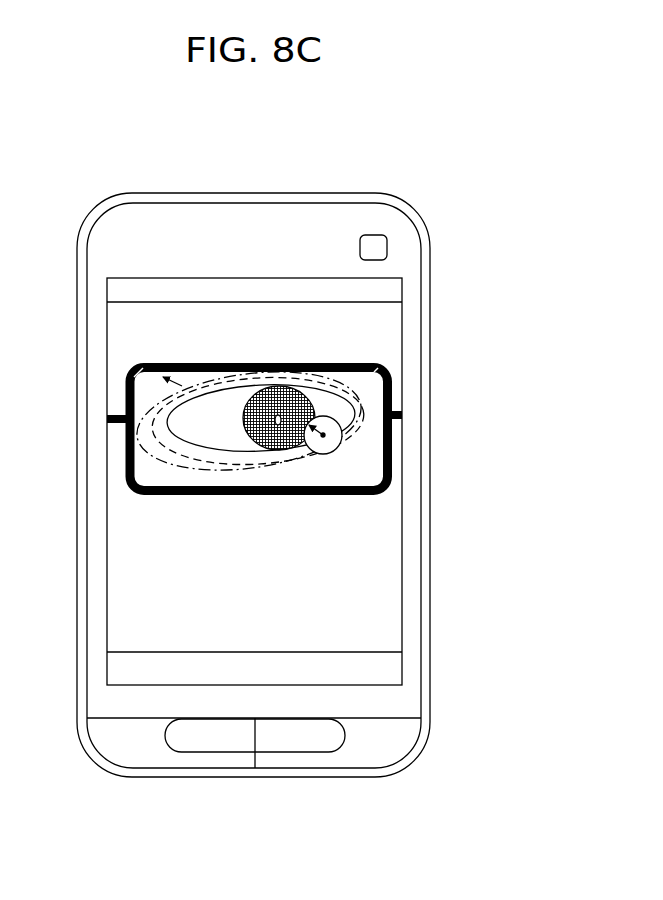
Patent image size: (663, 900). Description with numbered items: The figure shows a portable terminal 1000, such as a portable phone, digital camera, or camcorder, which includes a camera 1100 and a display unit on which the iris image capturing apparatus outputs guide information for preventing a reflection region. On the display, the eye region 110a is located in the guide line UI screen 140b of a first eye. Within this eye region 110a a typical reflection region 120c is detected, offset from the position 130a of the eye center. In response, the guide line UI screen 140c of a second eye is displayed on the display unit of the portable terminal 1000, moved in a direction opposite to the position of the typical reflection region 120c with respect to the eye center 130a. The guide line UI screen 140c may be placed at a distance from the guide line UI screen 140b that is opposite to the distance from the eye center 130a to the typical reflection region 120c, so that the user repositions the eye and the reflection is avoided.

The portable terminal 1000 is at (255, 194).
The camera 1100 is at (387, 248).
The eye region 110a is at (357, 378).
The typical reflection region 120c is at (323, 435).
The position of the eye center 130a is at (277, 410).
The guide line UI screen of a first eye 140b is at (257, 467).
The guide line UI screen of a second eye 140c is at (163, 443).